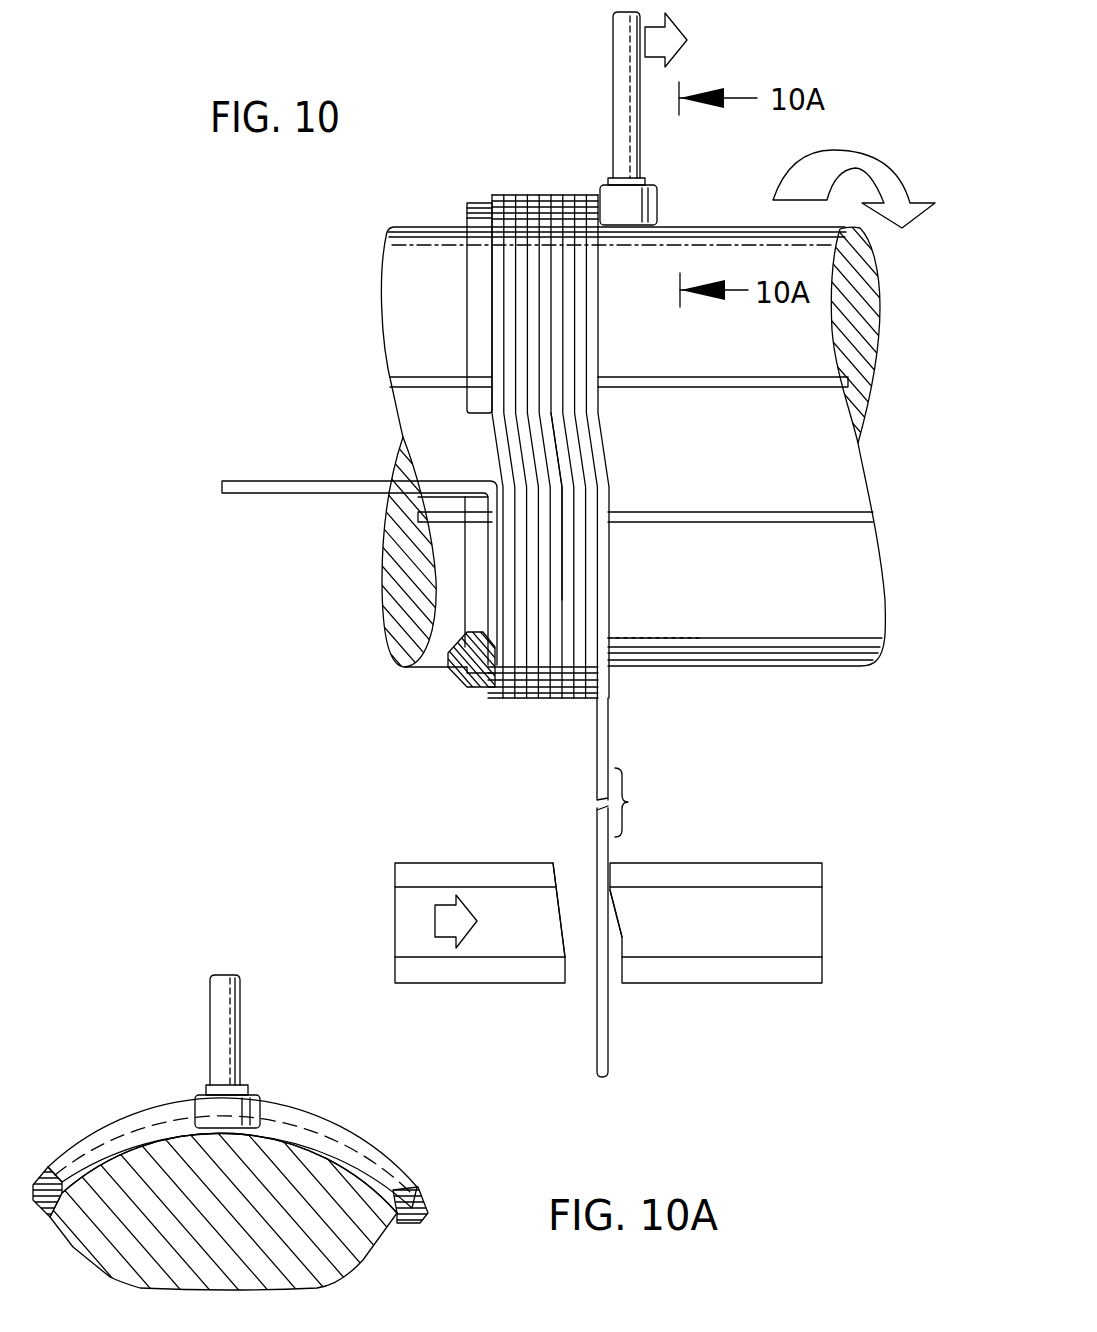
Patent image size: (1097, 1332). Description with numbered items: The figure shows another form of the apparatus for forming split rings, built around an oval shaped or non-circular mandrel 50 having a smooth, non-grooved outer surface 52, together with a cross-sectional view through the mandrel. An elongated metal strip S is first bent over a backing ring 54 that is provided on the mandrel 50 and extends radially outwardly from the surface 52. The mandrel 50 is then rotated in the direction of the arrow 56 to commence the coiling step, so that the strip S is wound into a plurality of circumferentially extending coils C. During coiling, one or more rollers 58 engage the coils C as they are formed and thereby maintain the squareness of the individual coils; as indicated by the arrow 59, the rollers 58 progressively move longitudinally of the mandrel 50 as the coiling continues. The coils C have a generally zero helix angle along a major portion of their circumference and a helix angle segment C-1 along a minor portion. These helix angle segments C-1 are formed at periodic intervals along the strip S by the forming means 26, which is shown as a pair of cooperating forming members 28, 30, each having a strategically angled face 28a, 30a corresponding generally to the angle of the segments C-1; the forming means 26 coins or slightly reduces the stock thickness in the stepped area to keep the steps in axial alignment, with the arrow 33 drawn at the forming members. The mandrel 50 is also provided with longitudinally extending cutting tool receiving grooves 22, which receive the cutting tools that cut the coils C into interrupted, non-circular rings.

In FIG. 10, the cutting tool receiving grooves 22 is at (792, 388).
In FIG. 10, the forming means 26 is at (582, 910).
In FIG. 10, the forming member 28 is at (492, 983).
In FIG. 10, the angled face 28a is at (560, 903).
In FIG. 10, the forming member 30 is at (785, 865).
In FIG. 10, the angled face 30a is at (620, 937).
In FIG. 10, the direction of jaw movement 33 is at (435, 923).
In FIG. 10, the mandrel 50 is at (362, 243).
In FIG. 10A, the mandrel 50 is at (283, 1160).
In FIG. 10, the outer surface 52 is at (417, 290).
In FIG. 10A, the outer surface 52 is at (347, 1168).
In FIG. 10, the backing ring 54 is at (467, 215).
In FIG. 10A, the backing ring 54 is at (418, 1208).
In FIG. 10, the arrow 56 is at (892, 166).
In FIG. 10, the rollers 58 is at (660, 203).
In FIG. 10A, the rollers 58 is at (205, 1105).
In FIG. 10, the arrow 59 is at (670, 33).
In FIG. 10, the coils C is at (550, 198).
In FIG. 10A, the coils C is at (112, 1123).
In FIG. 10, the helix angle segment C-1 is at (578, 427).
In FIG. 10, the metal strip S is at (262, 480).